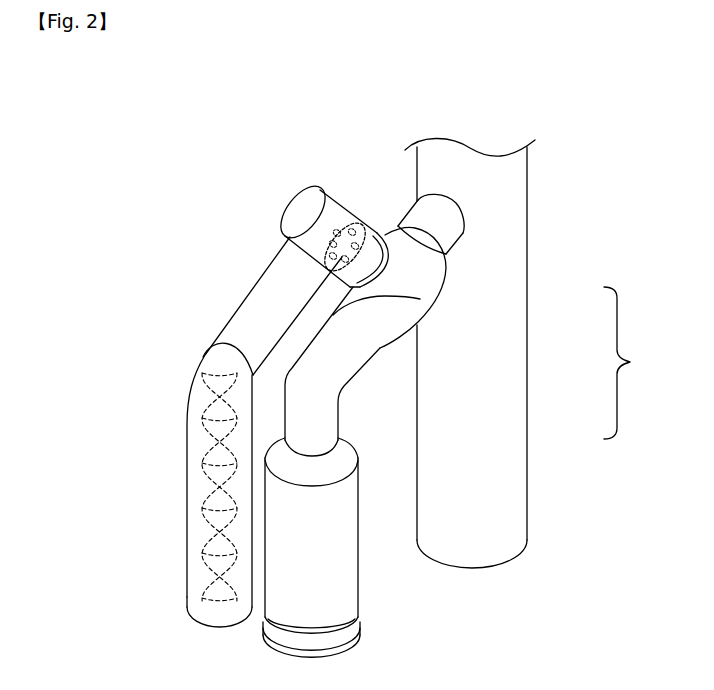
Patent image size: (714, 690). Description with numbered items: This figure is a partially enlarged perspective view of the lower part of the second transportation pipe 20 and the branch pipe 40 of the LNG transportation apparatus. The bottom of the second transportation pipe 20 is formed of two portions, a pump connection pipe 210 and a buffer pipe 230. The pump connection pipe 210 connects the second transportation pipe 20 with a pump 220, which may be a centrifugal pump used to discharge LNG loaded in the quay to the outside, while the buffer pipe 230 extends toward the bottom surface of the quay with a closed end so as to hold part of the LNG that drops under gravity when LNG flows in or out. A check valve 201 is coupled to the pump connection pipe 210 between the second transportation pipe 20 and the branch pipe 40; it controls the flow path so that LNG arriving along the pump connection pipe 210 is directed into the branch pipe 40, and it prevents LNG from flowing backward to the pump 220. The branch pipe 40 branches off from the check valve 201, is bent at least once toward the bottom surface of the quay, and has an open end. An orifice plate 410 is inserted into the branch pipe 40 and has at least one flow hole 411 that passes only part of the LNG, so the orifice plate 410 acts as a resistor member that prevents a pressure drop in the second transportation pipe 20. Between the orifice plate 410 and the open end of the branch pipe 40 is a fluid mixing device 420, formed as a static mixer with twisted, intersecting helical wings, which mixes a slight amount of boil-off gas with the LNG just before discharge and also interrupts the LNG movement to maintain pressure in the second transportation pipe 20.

The second transportation pipe 20 is at (632, 363).
The check valve 201 is at (413, 263).
The pump connection pipe 210 is at (352, 352).
The pump 220 is at (333, 502).
The buffer pipe 230 is at (483, 450).
The branch pipe 40 is at (271, 293).
The orifice plate 410 is at (380, 232).
The flow hole 411 is at (346, 235).
The fluid mixing device 420 is at (211, 461).